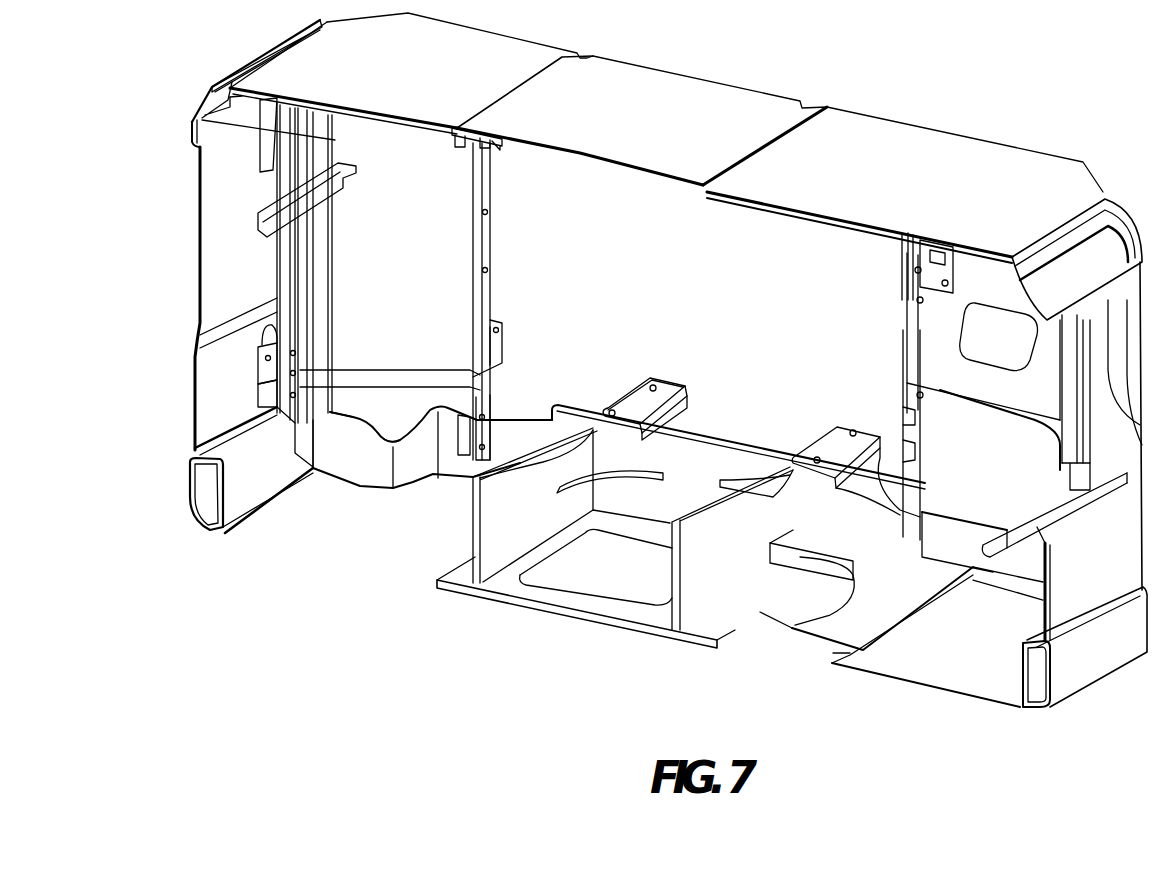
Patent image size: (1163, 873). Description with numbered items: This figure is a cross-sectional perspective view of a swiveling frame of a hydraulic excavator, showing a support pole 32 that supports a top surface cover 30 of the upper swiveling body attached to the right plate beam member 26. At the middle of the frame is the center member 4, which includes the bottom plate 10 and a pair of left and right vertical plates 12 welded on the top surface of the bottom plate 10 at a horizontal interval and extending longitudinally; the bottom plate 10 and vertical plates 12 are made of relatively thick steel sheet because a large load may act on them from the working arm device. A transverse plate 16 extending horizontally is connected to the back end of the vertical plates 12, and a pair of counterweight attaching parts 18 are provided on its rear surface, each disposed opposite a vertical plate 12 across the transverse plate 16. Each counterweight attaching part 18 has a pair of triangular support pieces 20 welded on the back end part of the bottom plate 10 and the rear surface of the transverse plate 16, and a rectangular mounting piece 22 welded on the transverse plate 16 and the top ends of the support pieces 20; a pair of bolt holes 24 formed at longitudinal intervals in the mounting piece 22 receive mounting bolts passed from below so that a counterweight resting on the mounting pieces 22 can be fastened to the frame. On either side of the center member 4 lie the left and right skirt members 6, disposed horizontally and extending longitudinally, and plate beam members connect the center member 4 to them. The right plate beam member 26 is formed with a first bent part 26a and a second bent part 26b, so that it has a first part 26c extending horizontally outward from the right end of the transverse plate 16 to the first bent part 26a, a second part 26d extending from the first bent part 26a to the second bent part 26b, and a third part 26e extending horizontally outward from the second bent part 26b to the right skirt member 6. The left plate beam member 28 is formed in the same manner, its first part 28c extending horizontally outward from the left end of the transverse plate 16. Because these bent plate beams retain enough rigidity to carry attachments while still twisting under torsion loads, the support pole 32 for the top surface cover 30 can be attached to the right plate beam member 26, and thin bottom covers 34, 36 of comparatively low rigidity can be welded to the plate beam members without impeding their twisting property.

The center member 4 is at (670, 510).
The skirt member 6 is at (235, 507).
The bottom plate 10 is at (507, 583).
The vertical plate 12 is at (467, 570).
The transverse plate 16 is at (720, 460).
The counterweight attaching part 18 is at (751, 419).
The support piece 20 is at (690, 394).
The mounting piece 22 is at (662, 385).
The bolt hole 24 is at (612, 408).
The right plate beam member 26 is at (352, 486).
The first bent part 26a is at (438, 413).
The second bent part 26b is at (393, 447).
The first part 26c is at (462, 423).
The second part 26d is at (420, 440).
The third part 26e is at (348, 427).
The left plate beam member 28 is at (957, 520).
The first part 28c is at (983, 540).
The top surface cover 30 is at (650, 95).
The support pole 32 is at (488, 190).
The bottom cover 34 is at (833, 625).
The bottom cover 36 is at (940, 673).